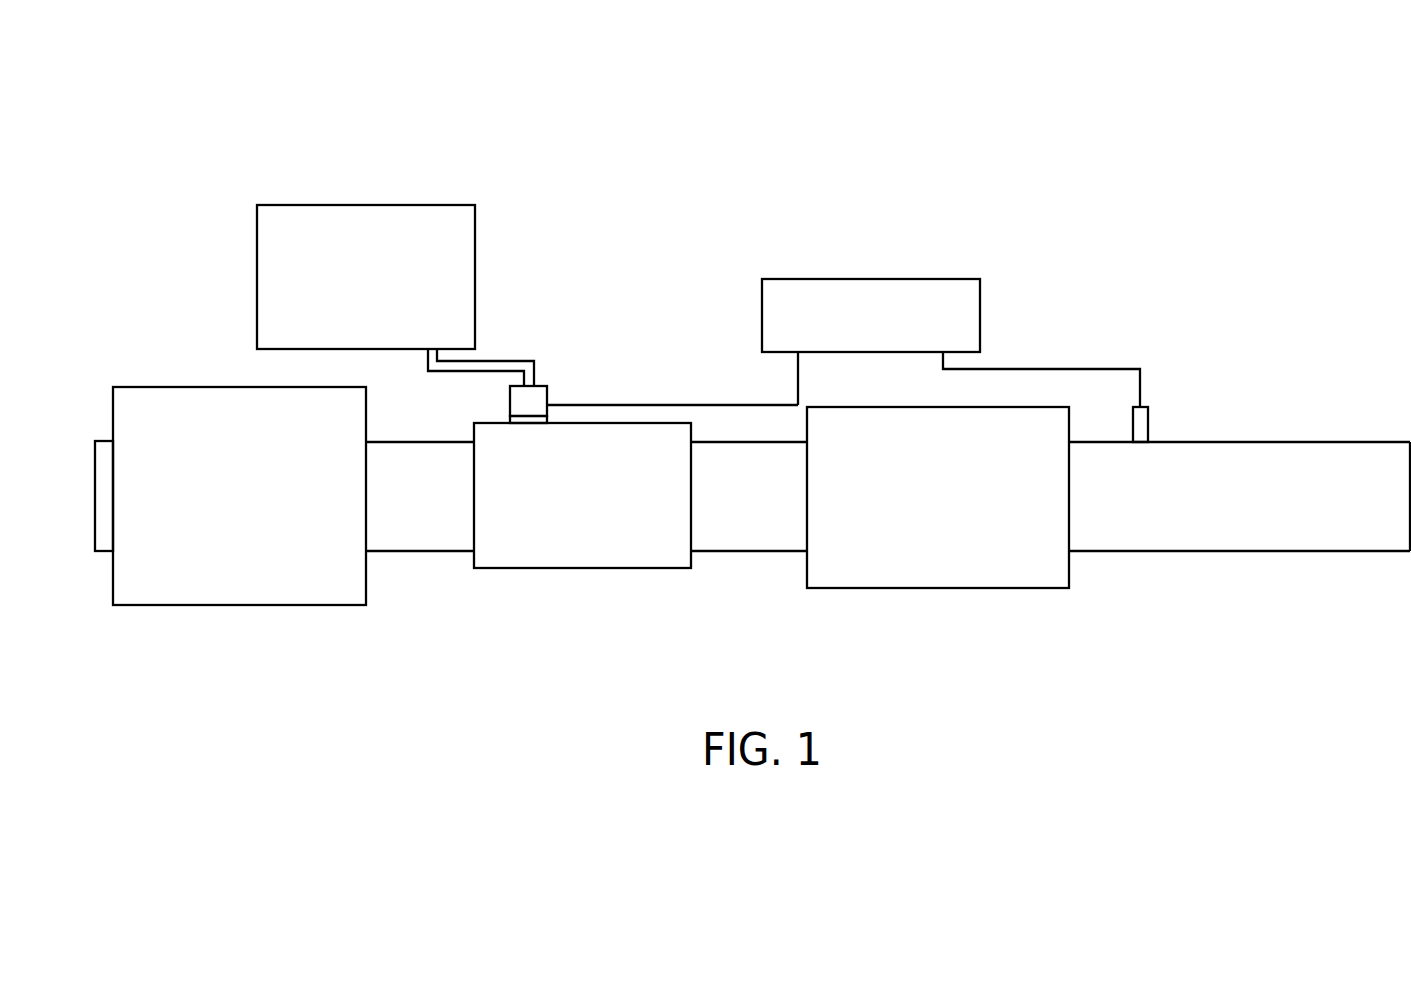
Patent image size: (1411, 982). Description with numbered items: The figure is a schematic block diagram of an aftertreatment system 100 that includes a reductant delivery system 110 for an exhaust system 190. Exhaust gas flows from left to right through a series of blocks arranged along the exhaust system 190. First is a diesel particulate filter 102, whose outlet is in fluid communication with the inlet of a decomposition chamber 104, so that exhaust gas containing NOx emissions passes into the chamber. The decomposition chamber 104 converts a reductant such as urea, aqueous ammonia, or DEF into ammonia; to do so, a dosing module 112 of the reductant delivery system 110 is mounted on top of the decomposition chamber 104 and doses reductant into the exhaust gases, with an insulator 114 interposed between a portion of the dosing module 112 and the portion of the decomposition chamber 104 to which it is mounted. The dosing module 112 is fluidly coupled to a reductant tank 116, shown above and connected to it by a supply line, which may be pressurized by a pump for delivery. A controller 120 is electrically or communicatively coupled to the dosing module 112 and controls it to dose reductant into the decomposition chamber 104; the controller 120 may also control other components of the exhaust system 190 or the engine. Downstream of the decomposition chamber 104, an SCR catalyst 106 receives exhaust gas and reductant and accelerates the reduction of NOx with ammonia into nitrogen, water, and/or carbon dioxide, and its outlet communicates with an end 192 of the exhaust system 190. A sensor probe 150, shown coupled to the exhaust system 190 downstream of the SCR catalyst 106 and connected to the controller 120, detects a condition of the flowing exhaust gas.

The aftertreatment system 100 is at (1027, 346).
The diesel particulate filter 102 is at (270, 605).
The decomposition chamber 104 is at (676, 423).
The SCR catalyst 106 is at (948, 588).
The reductant delivery system 110 is at (646, 328).
The dosing module 112 is at (549, 398).
The insulator 114 is at (510, 418).
The reductant tank 116 is at (432, 205).
The controller 120 is at (853, 279).
The sensor probe 150 is at (1174, 419).
The exhaust system 190 is at (466, 645).
The end of the exhaust system 192 is at (1331, 563).